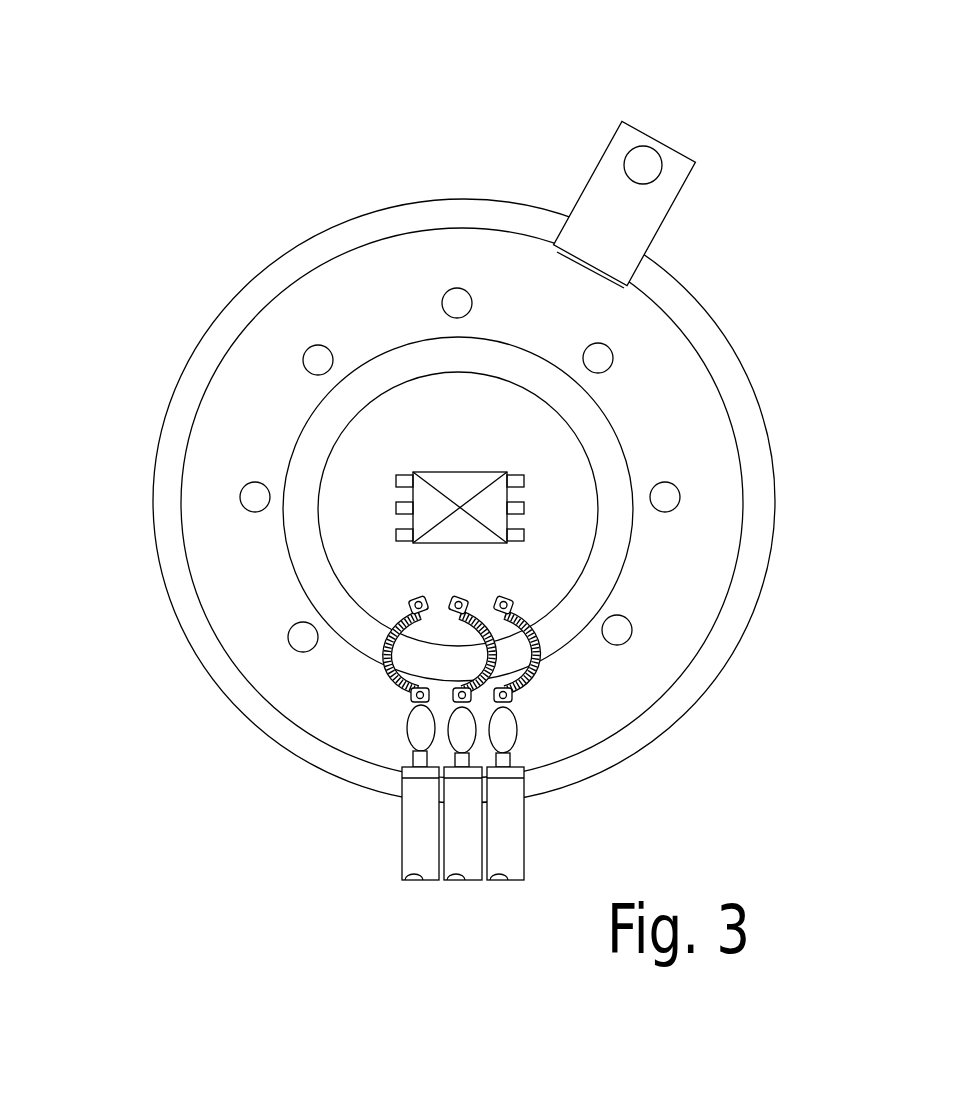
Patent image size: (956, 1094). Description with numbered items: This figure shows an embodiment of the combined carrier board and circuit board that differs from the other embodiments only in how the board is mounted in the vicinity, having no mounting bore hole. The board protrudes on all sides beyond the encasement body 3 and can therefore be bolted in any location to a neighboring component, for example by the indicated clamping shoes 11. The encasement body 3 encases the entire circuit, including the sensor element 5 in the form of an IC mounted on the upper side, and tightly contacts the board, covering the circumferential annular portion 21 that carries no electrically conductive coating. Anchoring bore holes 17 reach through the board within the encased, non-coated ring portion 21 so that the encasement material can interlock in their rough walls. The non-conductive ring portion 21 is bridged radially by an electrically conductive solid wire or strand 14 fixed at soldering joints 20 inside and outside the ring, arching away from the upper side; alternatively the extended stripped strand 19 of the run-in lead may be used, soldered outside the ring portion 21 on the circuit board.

The encasement body 3 is at (191, 423).
The annular portion 21 is at (485, 348).
The anchoring bore holes 17 is at (312, 345).
The clamping shoes 11 is at (670, 172).
The sensor element 5 is at (431, 508).
The solid wire or strand 14 is at (425, 608).
The soldering joints 20 is at (415, 742).
The strand of the run-in lead 19 is at (415, 792).